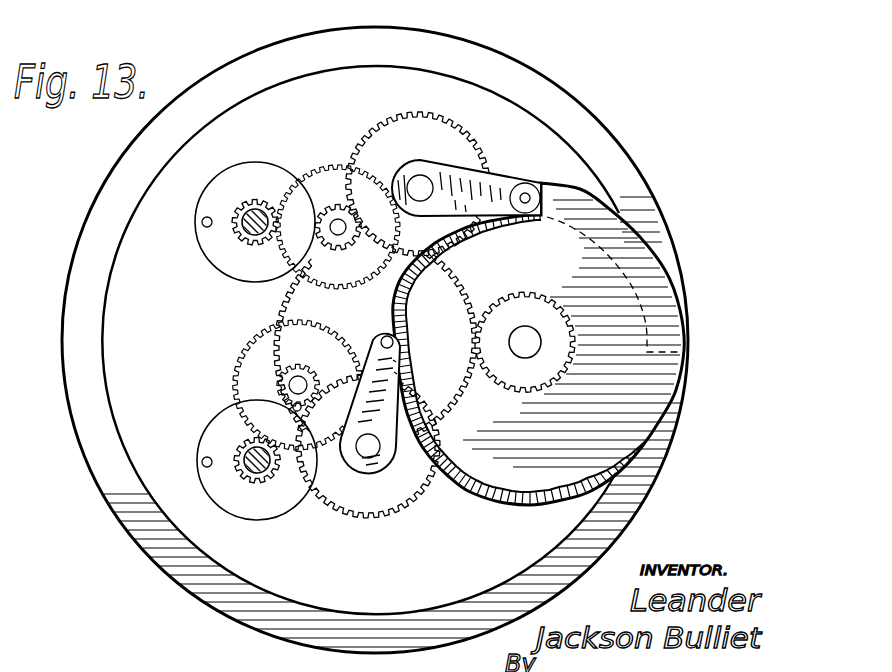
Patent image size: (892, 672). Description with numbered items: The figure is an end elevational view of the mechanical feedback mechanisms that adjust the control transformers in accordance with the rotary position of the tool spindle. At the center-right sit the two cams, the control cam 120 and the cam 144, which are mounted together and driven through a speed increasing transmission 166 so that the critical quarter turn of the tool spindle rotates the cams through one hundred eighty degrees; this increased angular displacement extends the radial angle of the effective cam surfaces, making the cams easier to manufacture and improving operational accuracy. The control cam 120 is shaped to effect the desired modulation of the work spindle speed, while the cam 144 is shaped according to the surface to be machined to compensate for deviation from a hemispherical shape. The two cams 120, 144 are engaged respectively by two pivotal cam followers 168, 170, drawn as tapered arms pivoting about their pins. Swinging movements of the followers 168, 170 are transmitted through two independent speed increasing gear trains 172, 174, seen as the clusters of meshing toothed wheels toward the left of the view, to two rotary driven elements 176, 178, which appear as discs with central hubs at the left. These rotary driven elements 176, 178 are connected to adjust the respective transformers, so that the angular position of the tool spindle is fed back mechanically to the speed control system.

The control cam 120 is at (628, 468).
The cam 144 is at (582, 200).
The speed increasing transmission 166 is at (499, 287).
The pivotal cam follower 168 is at (480, 186).
The pivotal cam follower 170 is at (372, 360).
The speed increasing gear train 172 is at (360, 142).
The speed increasing gear train 174 is at (319, 495).
The rotary driven element 176 is at (250, 236).
The rotary driven element 178 is at (247, 474).